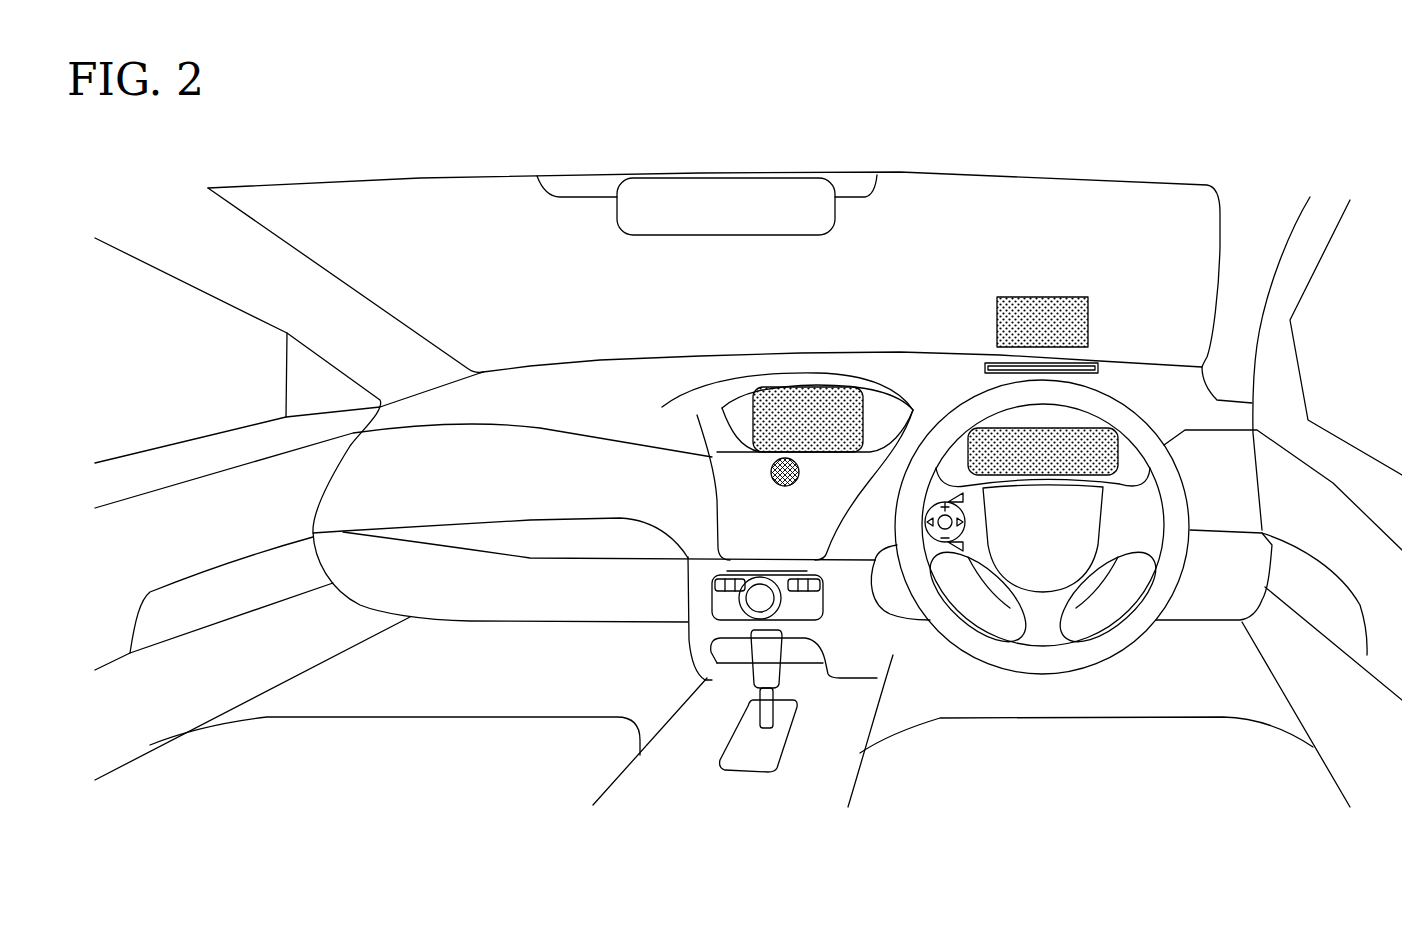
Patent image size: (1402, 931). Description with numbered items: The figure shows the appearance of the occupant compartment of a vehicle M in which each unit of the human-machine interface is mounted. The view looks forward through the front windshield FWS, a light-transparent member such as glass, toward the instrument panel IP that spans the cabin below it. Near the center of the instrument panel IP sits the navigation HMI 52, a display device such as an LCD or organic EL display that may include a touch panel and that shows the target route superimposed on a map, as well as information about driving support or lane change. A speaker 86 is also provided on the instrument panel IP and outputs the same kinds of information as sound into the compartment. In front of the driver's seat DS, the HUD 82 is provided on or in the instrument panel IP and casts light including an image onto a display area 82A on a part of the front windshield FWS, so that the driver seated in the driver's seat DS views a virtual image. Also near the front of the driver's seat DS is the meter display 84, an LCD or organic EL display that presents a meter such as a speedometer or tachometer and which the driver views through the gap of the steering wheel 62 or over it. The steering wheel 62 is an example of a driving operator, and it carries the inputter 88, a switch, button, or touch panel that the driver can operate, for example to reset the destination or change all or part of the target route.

The navigation HMI 52 is at (805, 387).
The steering wheel 62 is at (1130, 643).
The HUD 82 is at (1100, 365).
The display area 82A is at (1040, 295).
The meter display 84 is at (997, 427).
The speaker 86 is at (771, 473).
The inputter 88 is at (968, 522).
The front windshield FWS is at (523, 224).
The instrument panel IP is at (587, 397).
The driver's seat DS is at (1107, 762).
The vehicle M is at (1297, 164).